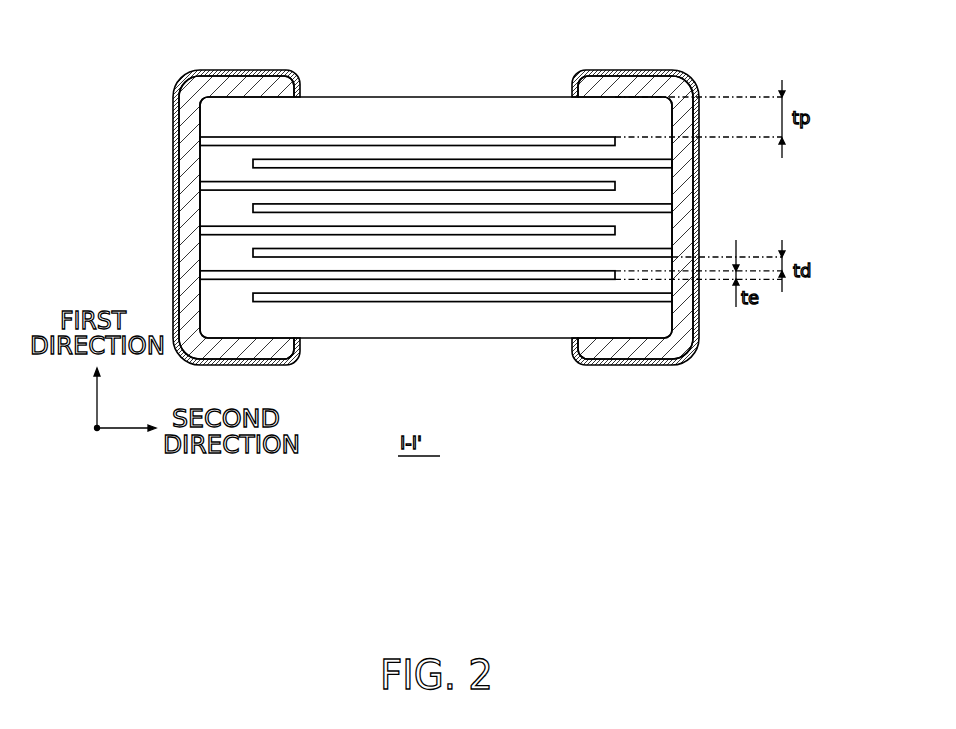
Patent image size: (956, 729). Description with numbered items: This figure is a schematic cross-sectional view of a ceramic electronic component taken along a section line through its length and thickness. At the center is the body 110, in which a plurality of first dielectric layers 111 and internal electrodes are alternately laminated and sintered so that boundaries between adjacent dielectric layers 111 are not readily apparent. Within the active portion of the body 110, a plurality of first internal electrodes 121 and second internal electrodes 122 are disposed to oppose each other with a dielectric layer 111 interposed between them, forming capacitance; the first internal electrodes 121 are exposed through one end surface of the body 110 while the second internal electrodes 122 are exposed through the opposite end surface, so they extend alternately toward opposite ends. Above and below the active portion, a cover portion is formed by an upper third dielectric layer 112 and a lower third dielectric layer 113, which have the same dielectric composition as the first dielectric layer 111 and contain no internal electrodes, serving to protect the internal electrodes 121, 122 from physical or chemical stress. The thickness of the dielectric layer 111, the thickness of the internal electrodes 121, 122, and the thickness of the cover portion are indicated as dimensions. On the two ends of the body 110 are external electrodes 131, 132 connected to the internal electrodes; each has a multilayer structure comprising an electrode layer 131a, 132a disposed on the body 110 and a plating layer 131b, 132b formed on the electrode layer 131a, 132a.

The body 110 is at (370, 97).
The first dielectric layer 111 is at (318, 173).
The 3-1-th dielectric layer 112 is at (442, 113).
The third dielectric layer 113 is at (352, 322).
The first internal electrode 121 is at (507, 138).
The second internal electrode 122 is at (563, 160).
The first external electrode 131 is at (159, 217).
The electrode layer 131a is at (175, 148).
The plating layer 131b is at (182, 176).
The second external electrode 132 is at (710, 217).
The electrode layer 132a is at (701, 197).
The plating layer 132b is at (700, 217).